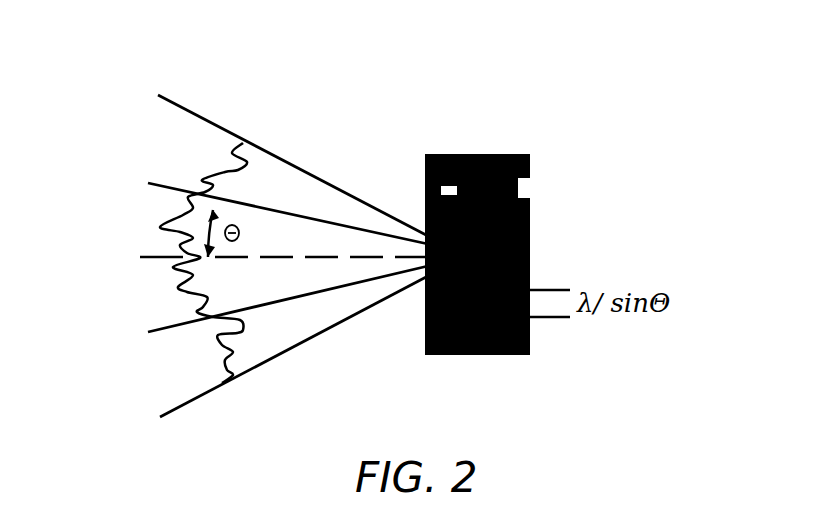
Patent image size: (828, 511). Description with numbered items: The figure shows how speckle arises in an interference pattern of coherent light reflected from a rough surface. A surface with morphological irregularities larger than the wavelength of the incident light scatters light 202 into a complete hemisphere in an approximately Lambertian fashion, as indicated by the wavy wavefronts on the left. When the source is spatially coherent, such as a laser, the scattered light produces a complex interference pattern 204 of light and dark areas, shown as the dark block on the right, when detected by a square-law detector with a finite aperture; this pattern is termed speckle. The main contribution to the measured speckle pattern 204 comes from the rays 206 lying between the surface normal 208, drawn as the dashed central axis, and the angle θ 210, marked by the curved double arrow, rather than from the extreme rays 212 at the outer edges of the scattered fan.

The scattered light 202 is at (162, 229).
The interference pattern 204 is at (498, 128).
The rays 206 is at (242, 199).
The surface normal 208 is at (141, 258).
The angle θ 210 is at (239, 233).
The extreme rays 212 is at (282, 160).